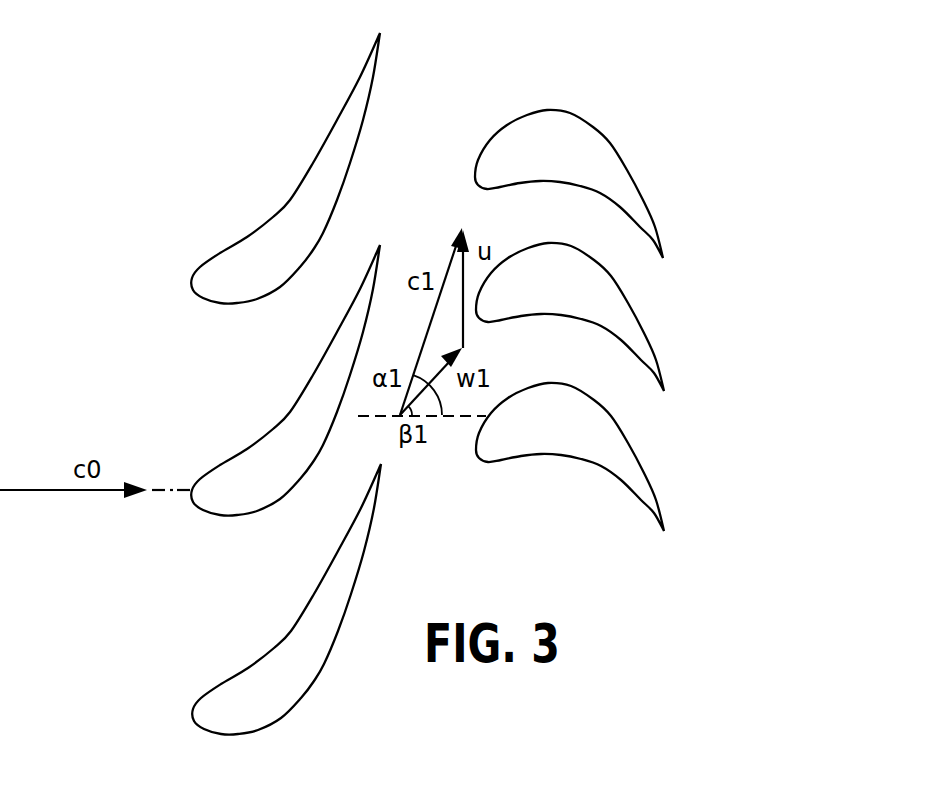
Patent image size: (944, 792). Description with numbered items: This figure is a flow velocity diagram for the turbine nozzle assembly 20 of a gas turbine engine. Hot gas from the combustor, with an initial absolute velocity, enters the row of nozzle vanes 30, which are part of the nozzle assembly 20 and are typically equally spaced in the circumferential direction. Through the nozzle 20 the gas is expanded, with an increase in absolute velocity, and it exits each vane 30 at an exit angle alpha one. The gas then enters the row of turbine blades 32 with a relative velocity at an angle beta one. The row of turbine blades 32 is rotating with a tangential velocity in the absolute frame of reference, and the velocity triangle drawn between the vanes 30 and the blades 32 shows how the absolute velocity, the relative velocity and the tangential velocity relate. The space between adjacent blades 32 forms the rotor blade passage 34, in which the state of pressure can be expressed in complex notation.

The turbine nozzle assembly 20 is at (136, 214).
The vanes 30 is at (288, 205).
The turbine blades 32 is at (592, 127).
The rotor blade passage 34 is at (579, 365).